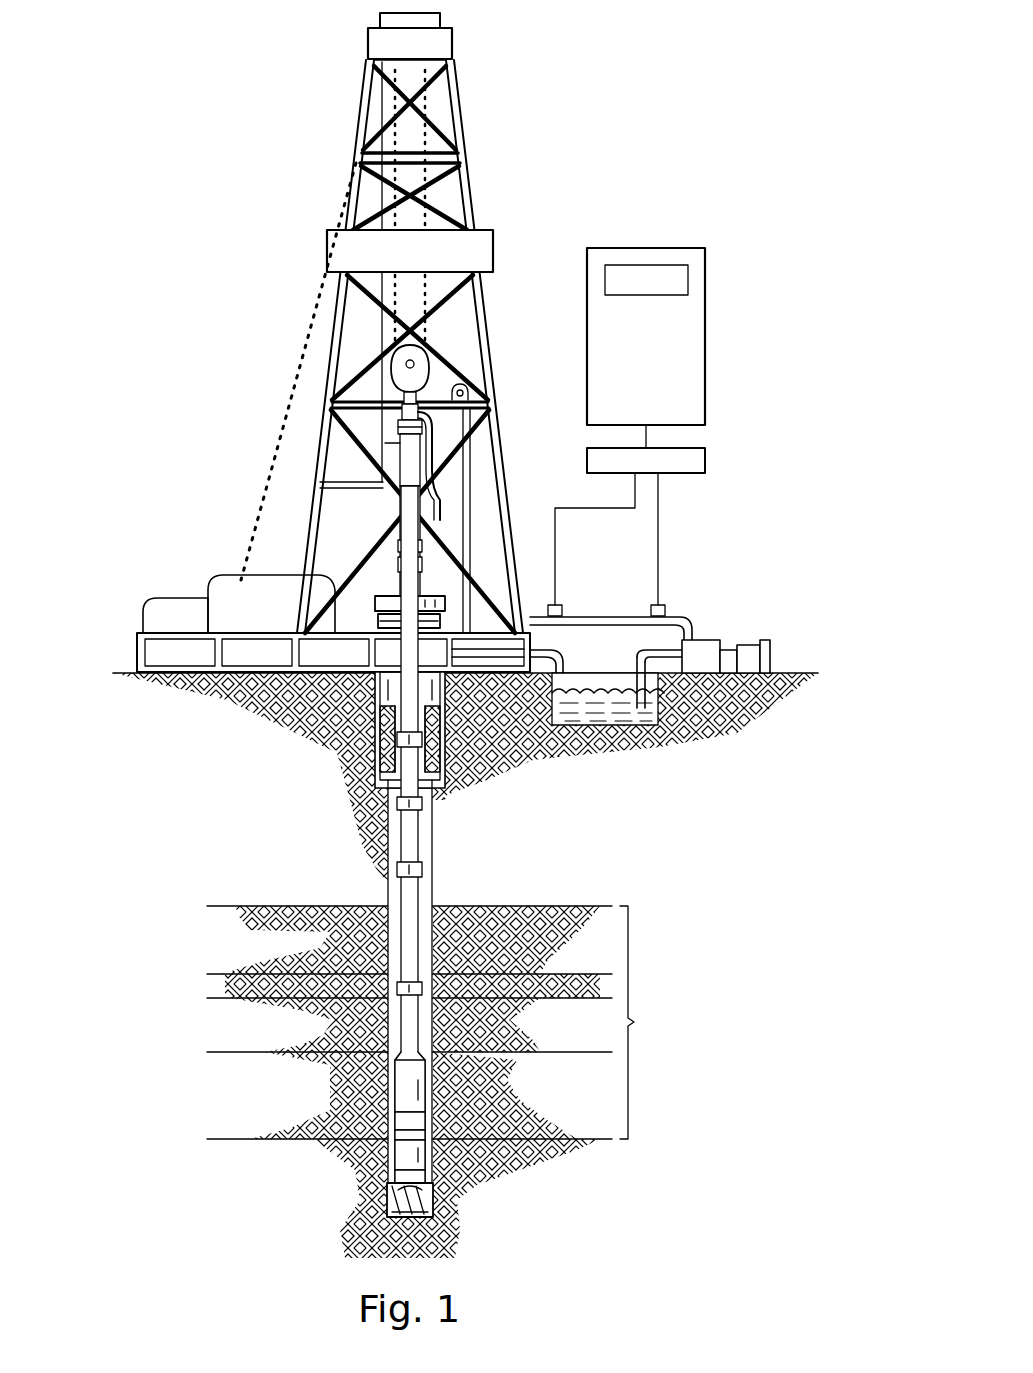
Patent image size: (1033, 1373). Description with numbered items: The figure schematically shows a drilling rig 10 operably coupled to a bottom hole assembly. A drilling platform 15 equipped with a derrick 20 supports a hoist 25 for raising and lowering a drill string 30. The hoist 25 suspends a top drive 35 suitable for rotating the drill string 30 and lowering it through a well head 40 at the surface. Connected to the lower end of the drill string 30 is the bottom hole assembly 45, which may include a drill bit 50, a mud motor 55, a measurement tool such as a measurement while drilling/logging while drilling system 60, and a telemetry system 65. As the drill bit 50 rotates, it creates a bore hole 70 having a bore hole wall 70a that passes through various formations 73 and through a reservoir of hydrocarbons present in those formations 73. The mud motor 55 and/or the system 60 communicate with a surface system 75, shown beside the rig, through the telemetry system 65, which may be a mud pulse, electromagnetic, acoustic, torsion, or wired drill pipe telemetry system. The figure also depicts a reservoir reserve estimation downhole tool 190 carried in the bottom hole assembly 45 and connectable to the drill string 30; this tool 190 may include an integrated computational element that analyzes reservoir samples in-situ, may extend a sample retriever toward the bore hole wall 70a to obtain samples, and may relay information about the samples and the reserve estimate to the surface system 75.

The drilling rig 10 is at (240, 285).
The drilling platform 15 is at (137, 650).
The derrick 20 is at (462, 147).
The hoist 25 is at (430, 372).
The drill string 30 is at (420, 835).
The top drive 35 is at (405, 455).
The well head 40 is at (388, 595).
The bottom hole assembly 45 is at (411, 1134).
The drill bit 50 is at (433, 1186).
The mud motor 55 is at (392, 1158).
The measurement while drilling/logging while drilling system 60 is at (395, 1130).
The telemetry system 65 is at (425, 1122).
The bore hole 70 is at (388, 898).
The bore hole wall 70a is at (432, 918).
The formations 73 is at (647, 1022).
The surface system 75 is at (707, 338).
The reservoir reserve estimation downhole tool 190 is at (395, 1092).